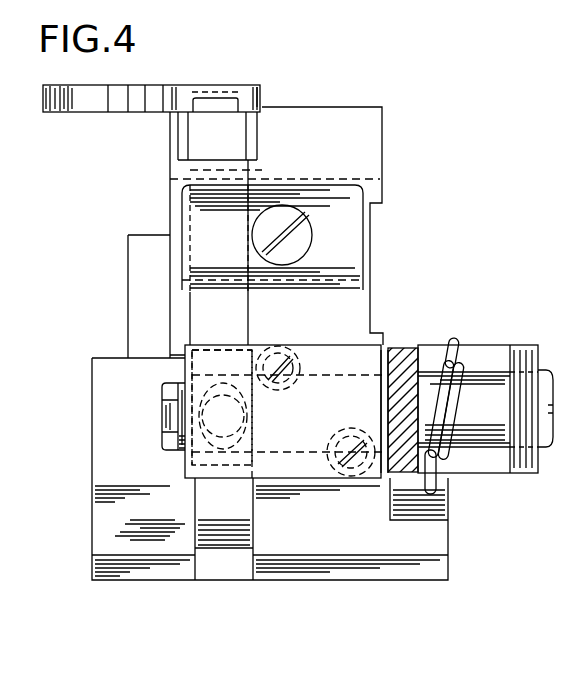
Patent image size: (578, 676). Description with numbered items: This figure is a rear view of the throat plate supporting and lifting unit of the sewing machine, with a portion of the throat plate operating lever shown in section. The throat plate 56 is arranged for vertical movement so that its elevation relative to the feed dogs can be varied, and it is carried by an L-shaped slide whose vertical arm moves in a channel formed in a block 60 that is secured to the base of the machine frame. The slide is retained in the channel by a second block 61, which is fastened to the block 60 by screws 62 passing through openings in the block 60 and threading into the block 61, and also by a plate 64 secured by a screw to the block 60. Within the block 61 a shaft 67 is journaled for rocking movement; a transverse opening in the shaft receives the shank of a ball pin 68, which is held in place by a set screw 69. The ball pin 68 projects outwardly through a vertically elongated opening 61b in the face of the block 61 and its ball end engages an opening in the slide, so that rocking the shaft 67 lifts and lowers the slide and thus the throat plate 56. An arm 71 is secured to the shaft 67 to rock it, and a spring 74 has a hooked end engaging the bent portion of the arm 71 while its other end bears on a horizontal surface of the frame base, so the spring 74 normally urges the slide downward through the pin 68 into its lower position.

The throat plate 56 is at (73, 113).
The block 60 is at (349, 322).
The block 61 is at (203, 457).
The vertically elongated opening 61b is at (230, 450).
The screws 62 is at (345, 432).
The plate 64 is at (343, 238).
The shaft 67 is at (483, 430).
The ball pin 68 is at (228, 418).
The set screw 69 is at (160, 404).
The arm 71 is at (408, 347).
The spring 74 is at (447, 410).